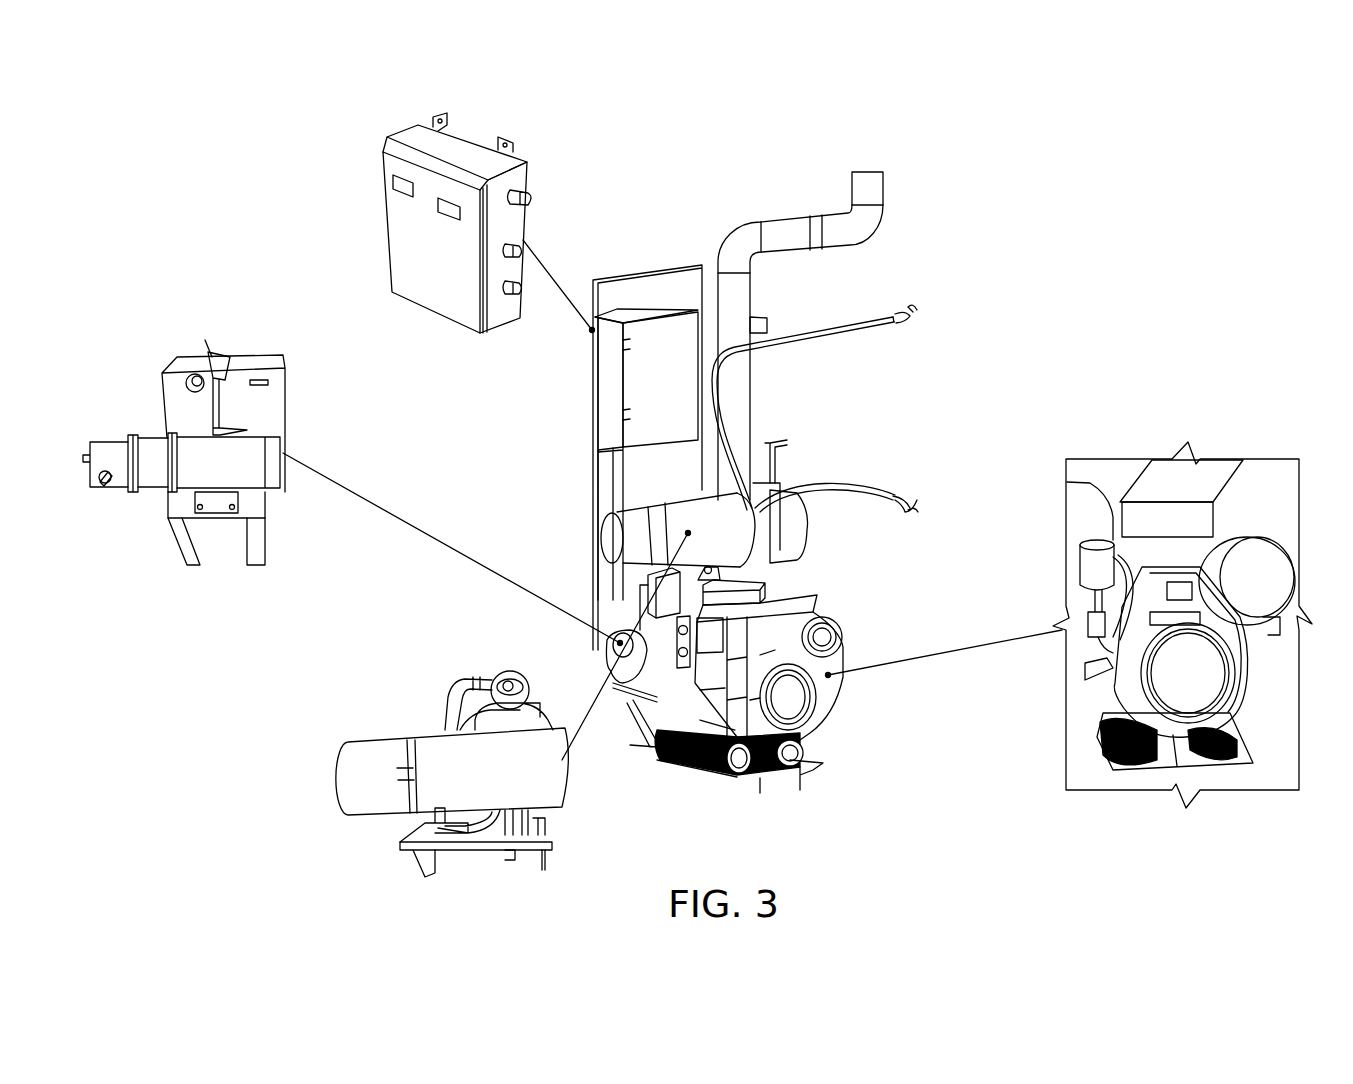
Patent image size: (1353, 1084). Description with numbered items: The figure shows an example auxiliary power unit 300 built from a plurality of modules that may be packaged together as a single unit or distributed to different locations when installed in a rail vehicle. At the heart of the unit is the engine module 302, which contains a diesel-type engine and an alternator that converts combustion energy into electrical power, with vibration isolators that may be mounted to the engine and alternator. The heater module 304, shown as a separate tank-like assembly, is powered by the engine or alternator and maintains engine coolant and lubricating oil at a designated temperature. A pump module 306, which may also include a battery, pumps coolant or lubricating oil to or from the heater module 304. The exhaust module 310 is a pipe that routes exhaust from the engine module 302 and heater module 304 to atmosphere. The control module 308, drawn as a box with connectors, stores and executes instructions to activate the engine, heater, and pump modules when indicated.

The auxiliary power unit 300 is at (1057, 148).
The engine module 302 is at (1262, 540).
The heater module 304 is at (552, 847).
The pump module 306 is at (270, 410).
The control module 308 is at (510, 228).
The exhaust module 310 is at (872, 180).